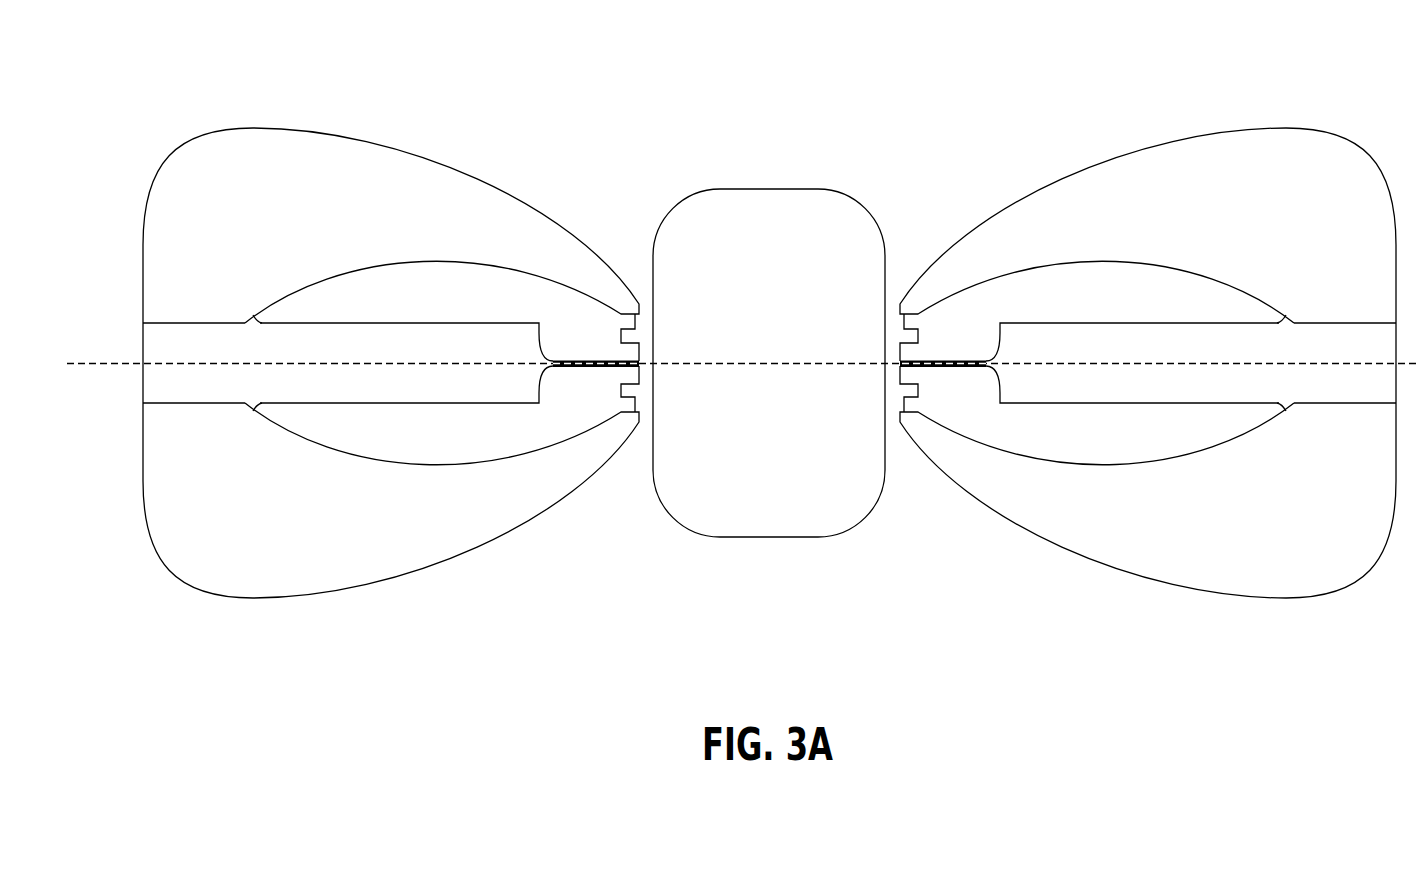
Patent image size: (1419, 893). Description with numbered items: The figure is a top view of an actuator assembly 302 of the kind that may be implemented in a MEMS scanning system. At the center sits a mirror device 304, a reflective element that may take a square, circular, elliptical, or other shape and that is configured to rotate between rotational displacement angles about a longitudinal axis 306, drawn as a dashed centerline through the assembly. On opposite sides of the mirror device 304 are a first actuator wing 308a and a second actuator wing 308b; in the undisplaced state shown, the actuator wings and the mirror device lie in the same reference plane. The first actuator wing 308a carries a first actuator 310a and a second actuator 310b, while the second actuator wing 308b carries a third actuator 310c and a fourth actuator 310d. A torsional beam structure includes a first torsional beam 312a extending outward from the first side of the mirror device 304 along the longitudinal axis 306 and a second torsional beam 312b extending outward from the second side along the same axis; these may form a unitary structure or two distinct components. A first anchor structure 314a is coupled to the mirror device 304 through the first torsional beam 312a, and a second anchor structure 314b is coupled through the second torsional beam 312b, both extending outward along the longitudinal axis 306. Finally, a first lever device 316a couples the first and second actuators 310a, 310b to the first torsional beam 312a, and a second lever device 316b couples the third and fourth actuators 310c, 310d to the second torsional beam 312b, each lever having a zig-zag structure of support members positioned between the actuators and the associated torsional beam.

The actuator assembly 302 is at (904, 74).
The mirror device 304 is at (771, 189).
The longitudinal axis 306 is at (102, 363).
The first actuator wing 308a is at (256, 106).
The second actuator wing 308b is at (1302, 107).
The first actuator 310a is at (287, 218).
The second actuator 310b is at (287, 522).
The third actuator 310c is at (1302, 218).
The fourth actuator 310d is at (1302, 522).
The first torsional beam 312a is at (571, 361).
The second torsional beam 312b is at (957, 361).
The first anchor structure 314a is at (340, 356).
The second anchor structure 314b is at (1242, 356).
The first lever device 316a is at (614, 379).
The second lever device 316b is at (925, 380).